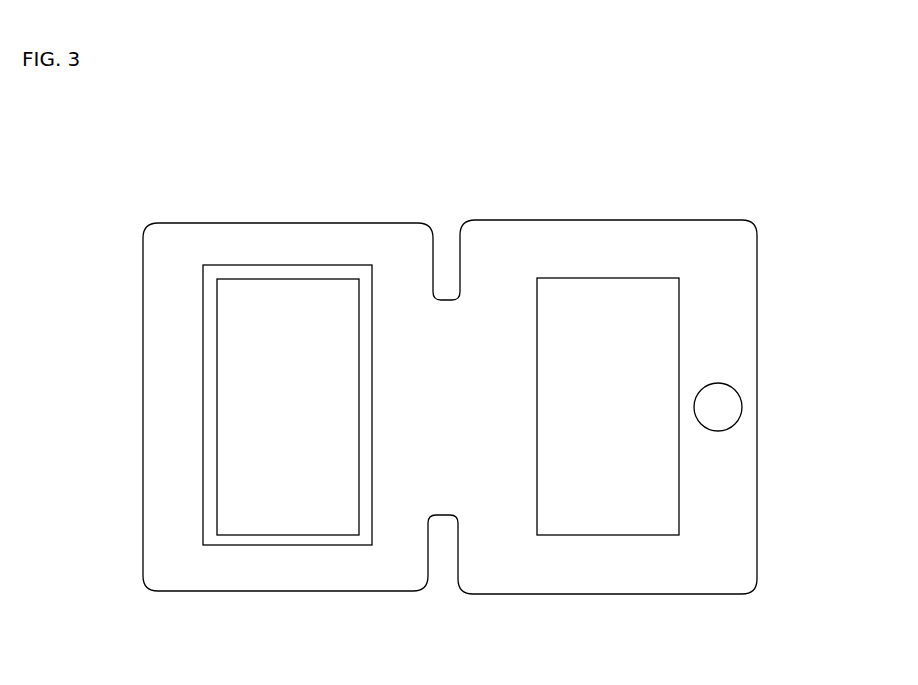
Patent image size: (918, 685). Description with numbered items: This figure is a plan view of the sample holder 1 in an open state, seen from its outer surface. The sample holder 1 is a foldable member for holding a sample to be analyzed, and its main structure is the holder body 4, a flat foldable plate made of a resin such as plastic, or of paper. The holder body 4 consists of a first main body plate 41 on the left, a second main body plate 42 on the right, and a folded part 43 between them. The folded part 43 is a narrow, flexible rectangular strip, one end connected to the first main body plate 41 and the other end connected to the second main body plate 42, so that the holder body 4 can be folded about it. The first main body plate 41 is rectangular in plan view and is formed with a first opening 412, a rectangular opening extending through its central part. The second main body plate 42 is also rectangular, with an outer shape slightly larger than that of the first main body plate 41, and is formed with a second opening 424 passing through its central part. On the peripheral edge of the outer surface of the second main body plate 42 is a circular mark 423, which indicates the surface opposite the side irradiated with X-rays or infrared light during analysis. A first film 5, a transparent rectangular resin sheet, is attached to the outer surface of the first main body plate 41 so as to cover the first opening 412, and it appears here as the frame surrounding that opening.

The sample holder 1 is at (627, 180).
The holder body 4 is at (207, 222).
The first main body plate 41 is at (276, 238).
The second main body plate 42 is at (710, 241).
The folded part 43 is at (440, 318).
The first opening 412 is at (218, 375).
The second opening 424 is at (685, 365).
The mark 423 is at (742, 407).
The first film 5 is at (373, 395).